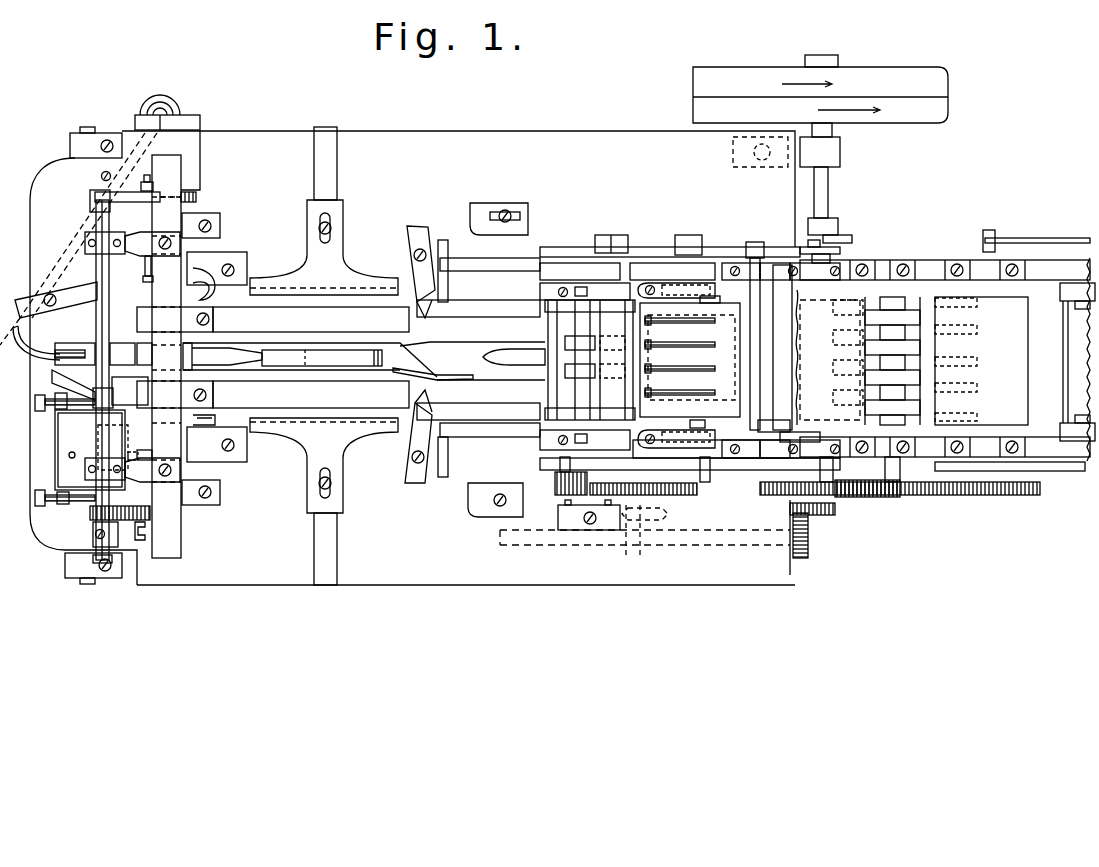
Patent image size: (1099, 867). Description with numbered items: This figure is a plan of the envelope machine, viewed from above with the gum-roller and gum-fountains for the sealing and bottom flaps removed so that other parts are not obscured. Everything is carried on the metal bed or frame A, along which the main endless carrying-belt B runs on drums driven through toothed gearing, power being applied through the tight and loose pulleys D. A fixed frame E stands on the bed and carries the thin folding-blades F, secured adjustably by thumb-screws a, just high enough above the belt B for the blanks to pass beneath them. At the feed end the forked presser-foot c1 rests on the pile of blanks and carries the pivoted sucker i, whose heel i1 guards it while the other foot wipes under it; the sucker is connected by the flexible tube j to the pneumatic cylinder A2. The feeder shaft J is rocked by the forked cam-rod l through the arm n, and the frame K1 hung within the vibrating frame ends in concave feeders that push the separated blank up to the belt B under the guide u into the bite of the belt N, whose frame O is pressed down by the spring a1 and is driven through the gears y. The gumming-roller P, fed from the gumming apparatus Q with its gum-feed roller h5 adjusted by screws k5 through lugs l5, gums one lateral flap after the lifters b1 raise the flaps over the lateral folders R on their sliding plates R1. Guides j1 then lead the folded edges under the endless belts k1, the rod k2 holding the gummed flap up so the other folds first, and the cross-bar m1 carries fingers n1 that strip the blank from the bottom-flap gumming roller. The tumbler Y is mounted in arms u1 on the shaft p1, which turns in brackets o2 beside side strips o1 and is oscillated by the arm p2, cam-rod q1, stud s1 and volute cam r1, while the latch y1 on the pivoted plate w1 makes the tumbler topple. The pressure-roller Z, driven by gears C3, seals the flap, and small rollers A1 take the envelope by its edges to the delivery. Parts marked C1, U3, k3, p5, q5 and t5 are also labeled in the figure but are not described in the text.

The bed, table, or frame A is at (412, 358).
The small rollers A1 is at (1060, 292).
The cylinder A2 is at (165, 108).
The main endless carrying-belt B is at (332, 363).
The clamp C' C1 is at (167, 123).
The toothed gears C3 is at (900, 516).
The tight and loose pulleys D is at (820, 145).
The fixed frame E is at (166, 356).
The folding-blades F is at (311, 357).
The shaft J is at (109, 262).
The frame K1 is at (56, 306).
The endless belt N is at (259, 354).
The frame O is at (310, 352).
The gumming-roller P is at (147, 452).
The gumming apparatus Q is at (90, 450).
The lateral folders R is at (324, 356).
The sliding plates R1 is at (325, 356).
The drum U3 is at (946, 361).
The tumbler Y is at (771, 344).
The pressure-roller Z is at (829, 357).
The thumb-screws a is at (190, 293).
The spring a1 is at (227, 356).
The inclines or lifters b1 is at (217, 357).
The presser-foot c1 is at (70, 346).
The gum-feed roller h5 is at (135, 448).
The sucker i is at (90, 355).
The heel i1 is at (472, 353).
The flexible tube j is at (30, 343).
The guides j1 is at (420, 354).
The endless belts k1 is at (296, 358).
The rod k2 is at (433, 380).
The screw k3 is at (65, 395).
The screws k5 is at (65, 506).
The forked cam-rod l is at (140, 184).
The lugs l5 is at (63, 507).
The cross-bar m1 is at (680, 360).
The arm n is at (138, 205).
The fingers n1 is at (690, 365).
The side strips o1 is at (736, 360).
The brackets o2 is at (741, 360).
The shaft p1 is at (720, 300).
The arm p2 is at (761, 243).
The plate p5 is at (113, 447).
The cam-rod q1 is at (840, 250).
The pin q5 is at (66, 456).
The volute cam r1 is at (838, 231).
The stud s1 is at (807, 239).
The pinion t5 is at (114, 514).
The guide u is at (122, 354).
The arms u1 is at (775, 359).
The plate w1 is at (795, 430).
The gears y is at (196, 197).
The latch y1 is at (773, 418).